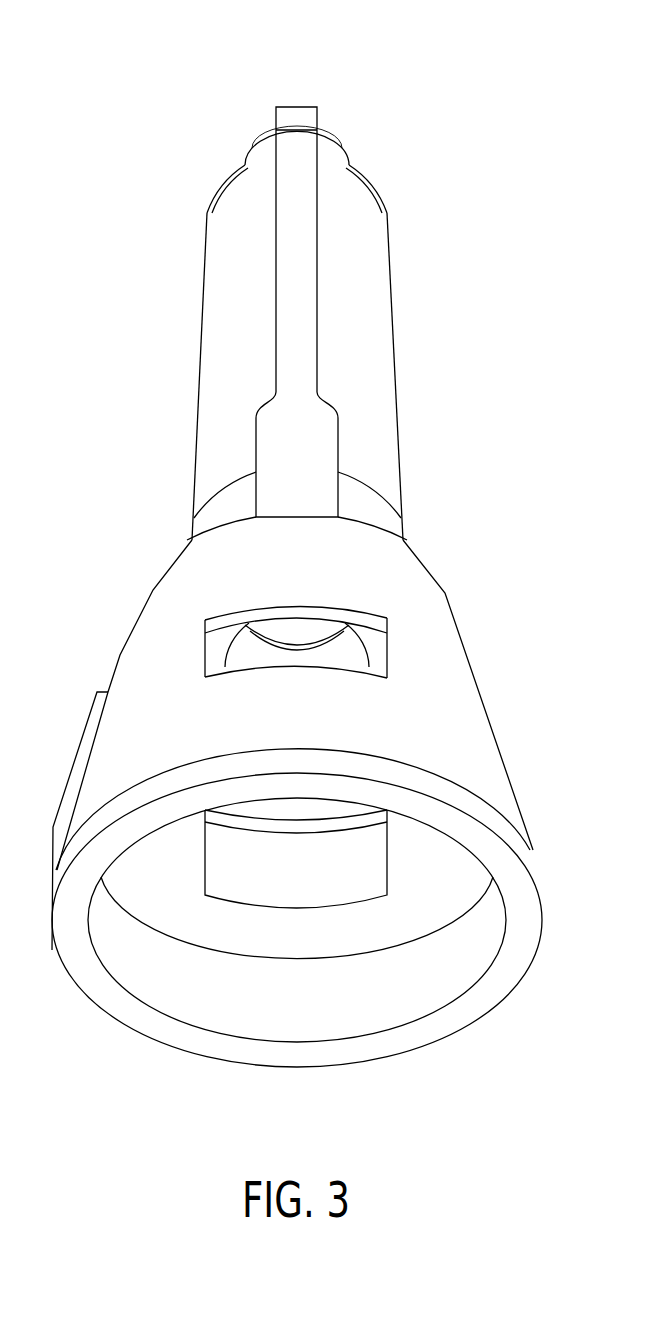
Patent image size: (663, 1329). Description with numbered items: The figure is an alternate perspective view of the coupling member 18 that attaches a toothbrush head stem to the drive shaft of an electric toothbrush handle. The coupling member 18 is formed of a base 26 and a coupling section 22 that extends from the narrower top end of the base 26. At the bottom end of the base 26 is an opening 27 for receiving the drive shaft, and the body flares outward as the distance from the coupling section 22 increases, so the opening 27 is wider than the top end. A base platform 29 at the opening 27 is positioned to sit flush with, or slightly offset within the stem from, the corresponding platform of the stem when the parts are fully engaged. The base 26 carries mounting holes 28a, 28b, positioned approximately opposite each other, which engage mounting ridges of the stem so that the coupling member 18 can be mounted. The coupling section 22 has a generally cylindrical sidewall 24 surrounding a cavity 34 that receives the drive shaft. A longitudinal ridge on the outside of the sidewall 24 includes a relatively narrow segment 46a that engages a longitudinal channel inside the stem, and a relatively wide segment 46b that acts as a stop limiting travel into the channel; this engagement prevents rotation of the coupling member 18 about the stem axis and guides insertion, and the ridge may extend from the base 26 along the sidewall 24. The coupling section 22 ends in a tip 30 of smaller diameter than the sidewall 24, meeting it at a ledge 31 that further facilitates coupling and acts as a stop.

The coupling member 18 is at (465, 83).
The coupling section 22 is at (116, 171).
The sidewall 24 is at (222, 270).
The base 26 is at (152, 647).
The opening 27 is at (244, 1088).
The mounting hole 28a is at (357, 655).
The mounting hole 28b is at (352, 867).
The base platform 29 is at (72, 934).
The tip 30 is at (262, 150).
The ledge 31 is at (370, 180).
The cavity 34 is at (288, 648).
The narrow segment of the longitudinal ridge 46a is at (303, 227).
The wide segment of the longitudinal ridge 46b is at (313, 442).